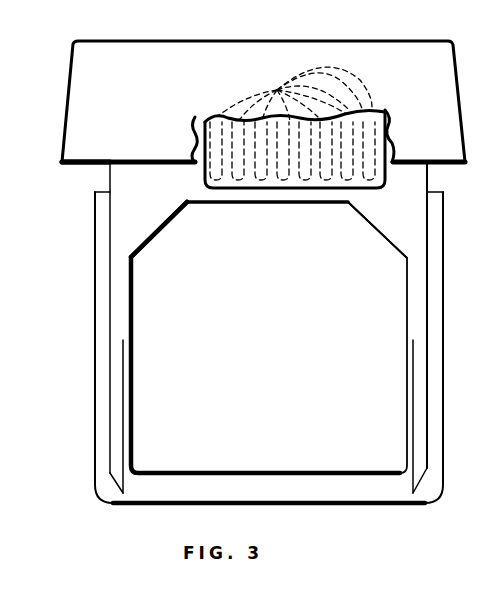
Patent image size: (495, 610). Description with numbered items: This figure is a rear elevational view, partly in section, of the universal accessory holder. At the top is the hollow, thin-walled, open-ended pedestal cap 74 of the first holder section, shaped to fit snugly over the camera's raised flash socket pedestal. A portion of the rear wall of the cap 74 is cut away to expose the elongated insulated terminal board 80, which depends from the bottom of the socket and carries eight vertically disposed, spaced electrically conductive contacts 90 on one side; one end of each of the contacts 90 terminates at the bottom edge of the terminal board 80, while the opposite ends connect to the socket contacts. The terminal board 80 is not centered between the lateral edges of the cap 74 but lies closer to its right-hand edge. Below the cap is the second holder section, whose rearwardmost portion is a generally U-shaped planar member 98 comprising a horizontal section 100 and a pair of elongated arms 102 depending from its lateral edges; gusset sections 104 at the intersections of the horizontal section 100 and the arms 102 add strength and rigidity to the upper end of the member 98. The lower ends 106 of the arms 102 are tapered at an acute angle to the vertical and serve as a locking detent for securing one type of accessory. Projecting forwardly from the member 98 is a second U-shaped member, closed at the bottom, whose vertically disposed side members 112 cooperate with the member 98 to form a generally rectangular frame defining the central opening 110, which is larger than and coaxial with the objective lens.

The pedestal cap 74 is at (462, 50).
The terminal board 80 is at (198, 170).
The electrically conductive contacts 90 is at (279, 84).
The U-shaped planar member 98 is at (108, 166).
The horizontal section 100 is at (270, 200).
The elongated arms 102 is at (122, 330).
The gusset sections 104 is at (170, 207).
The lower ends 106 is at (104, 483).
The central opening 110 is at (384, 394).
The side members 112 is at (95, 262).